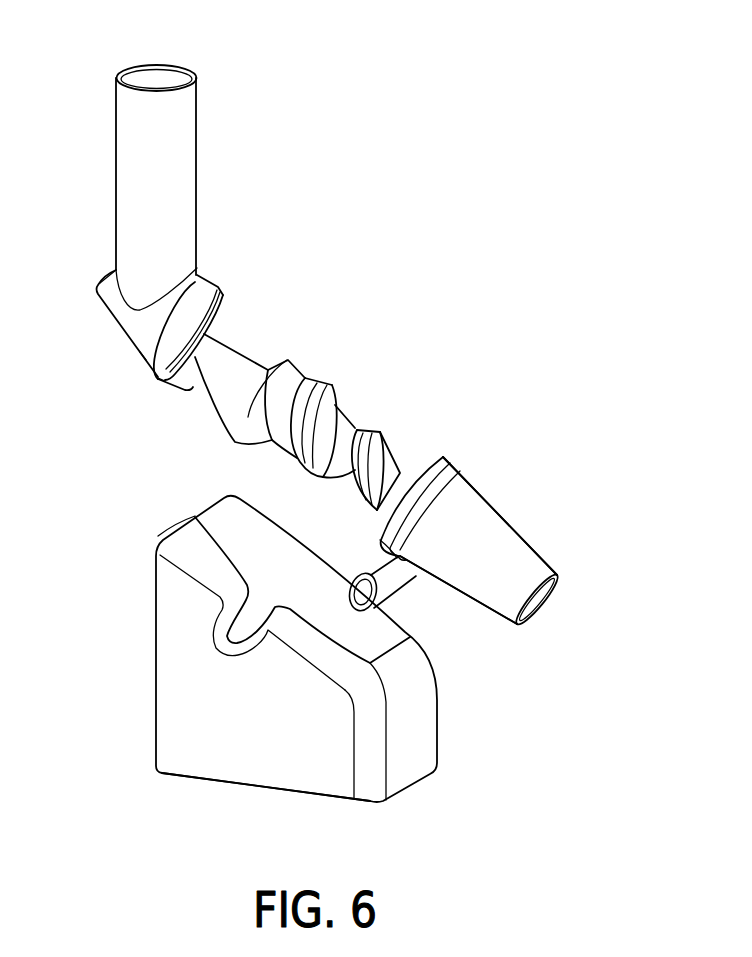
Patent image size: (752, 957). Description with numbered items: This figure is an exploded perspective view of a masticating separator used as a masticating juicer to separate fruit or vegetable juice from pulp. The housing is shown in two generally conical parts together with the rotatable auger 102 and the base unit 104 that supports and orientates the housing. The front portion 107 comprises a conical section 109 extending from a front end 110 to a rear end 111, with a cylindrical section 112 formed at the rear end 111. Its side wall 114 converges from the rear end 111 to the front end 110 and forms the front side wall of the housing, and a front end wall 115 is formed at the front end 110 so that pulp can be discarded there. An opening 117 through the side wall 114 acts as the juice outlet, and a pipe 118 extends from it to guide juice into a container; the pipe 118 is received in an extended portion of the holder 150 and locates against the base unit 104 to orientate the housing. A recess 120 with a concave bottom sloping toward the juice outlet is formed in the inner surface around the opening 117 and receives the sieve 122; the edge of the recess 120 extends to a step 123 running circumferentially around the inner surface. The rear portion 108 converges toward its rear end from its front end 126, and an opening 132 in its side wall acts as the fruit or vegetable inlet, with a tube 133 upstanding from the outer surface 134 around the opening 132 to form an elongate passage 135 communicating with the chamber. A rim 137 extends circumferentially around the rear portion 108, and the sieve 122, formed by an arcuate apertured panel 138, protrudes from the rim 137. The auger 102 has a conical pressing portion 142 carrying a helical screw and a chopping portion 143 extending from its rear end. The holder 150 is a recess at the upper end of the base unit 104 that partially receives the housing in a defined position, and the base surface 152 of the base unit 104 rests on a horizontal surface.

The rotatable auger 102 is at (335, 378).
The base unit 104 is at (178, 702).
The front portion 107 is at (503, 532).
The rear portion 108 is at (122, 322).
The conical section 109 is at (493, 611).
The front end 110 is at (552, 597).
The rear end 111 is at (428, 456).
The cylindrical section 112 is at (465, 465).
The side wall 114 is at (487, 490).
The front end wall 115 is at (535, 614).
The opening 117 is at (407, 580).
The pipe 118 is at (352, 588).
The recess 120 is at (390, 557).
The sieve 122 is at (165, 383).
The step 123 is at (418, 499).
The front end 126 is at (147, 357).
The opening 132 is at (147, 277).
The tube 133 is at (185, 172).
The outer surface 134 is at (107, 293).
The passage 135 is at (158, 80).
The rim 137 is at (225, 310).
The panel 138 is at (189, 390).
The pressing portion 142 is at (280, 447).
The chopping portion 143 is at (245, 363).
The holder 150 is at (227, 528).
The base surface 152 is at (258, 783).